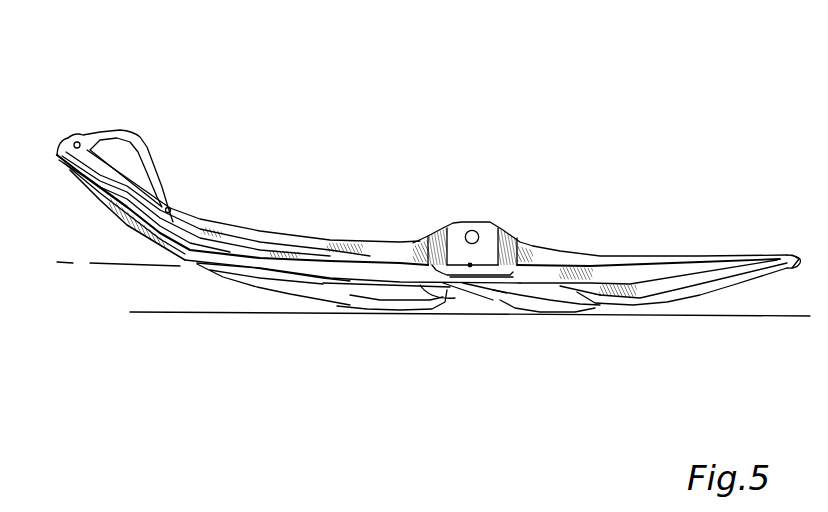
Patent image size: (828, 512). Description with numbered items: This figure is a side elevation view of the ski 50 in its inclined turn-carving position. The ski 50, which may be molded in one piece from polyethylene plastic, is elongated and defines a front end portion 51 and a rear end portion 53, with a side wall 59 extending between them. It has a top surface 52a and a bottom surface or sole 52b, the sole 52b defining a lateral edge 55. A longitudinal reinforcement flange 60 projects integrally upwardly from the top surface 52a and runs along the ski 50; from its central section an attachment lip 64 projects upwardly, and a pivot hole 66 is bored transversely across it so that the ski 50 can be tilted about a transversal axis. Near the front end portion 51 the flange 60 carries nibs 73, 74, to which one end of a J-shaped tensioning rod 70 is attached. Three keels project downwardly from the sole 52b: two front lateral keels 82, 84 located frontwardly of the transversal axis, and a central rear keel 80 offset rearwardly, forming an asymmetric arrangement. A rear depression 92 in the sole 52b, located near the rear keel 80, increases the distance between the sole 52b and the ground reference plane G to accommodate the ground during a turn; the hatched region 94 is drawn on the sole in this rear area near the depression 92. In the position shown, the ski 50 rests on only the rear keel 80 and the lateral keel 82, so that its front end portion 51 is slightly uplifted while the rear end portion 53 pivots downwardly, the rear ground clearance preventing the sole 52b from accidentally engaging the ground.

The ski 50 is at (387, 140).
The front end portion 51 is at (80, 181).
The top surface 52a is at (783, 252).
The bottom surface 52b is at (185, 262).
The rear end portion 53 is at (795, 253).
The lateral edge 55 is at (227, 255).
The side wall 59 is at (628, 270).
The longitudinal reinforcement flange 60 is at (310, 245).
The attachment lip 64 is at (497, 235).
The pivot hole 66 is at (478, 230).
The tensioning rod 70 is at (140, 137).
The nib 73 is at (75, 140).
The nib 74 is at (175, 208).
The central rear keel 80 is at (565, 307).
The front lateral keel 82 is at (403, 305).
The front lateral keel 84 is at (367, 287).
The rear depression 92 is at (580, 294).
The keel hatch portion 94 is at (640, 288).
The ground reference plane G is at (227, 313).